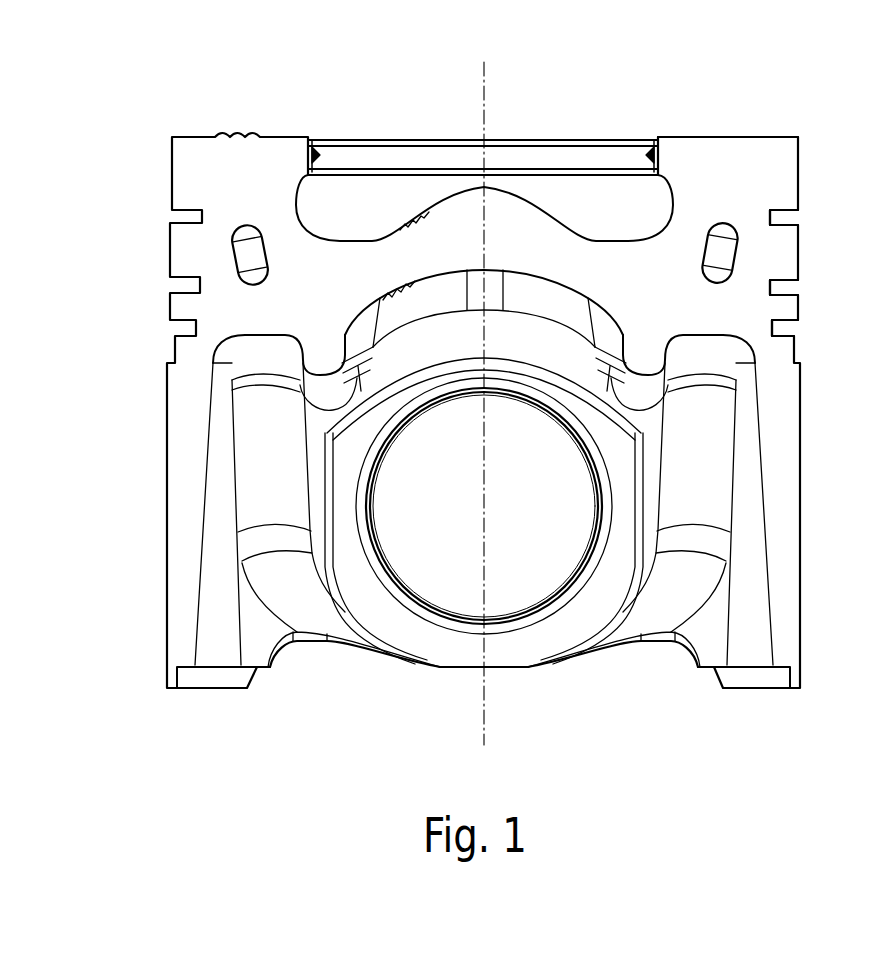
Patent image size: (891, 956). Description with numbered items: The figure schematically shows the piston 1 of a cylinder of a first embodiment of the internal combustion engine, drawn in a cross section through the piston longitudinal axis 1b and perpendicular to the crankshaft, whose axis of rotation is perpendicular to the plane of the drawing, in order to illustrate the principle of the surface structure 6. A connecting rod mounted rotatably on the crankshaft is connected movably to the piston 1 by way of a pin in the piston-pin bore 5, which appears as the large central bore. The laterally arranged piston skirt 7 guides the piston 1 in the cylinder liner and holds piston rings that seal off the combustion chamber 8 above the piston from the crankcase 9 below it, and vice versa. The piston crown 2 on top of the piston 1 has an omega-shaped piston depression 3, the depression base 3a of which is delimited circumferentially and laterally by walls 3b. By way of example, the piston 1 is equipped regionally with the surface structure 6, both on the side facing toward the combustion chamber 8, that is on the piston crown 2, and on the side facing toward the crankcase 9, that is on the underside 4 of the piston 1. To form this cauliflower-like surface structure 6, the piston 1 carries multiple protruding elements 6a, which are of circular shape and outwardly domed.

The piston 1 is at (158, 249).
The piston longitudinal axis 1b is at (468, 561).
The piston crown 2 is at (712, 137).
The piston depression 3 is at (484, 150).
The depression base 3a is at (355, 241).
The walls 3b is at (319, 153).
The underside 4 is at (527, 282).
The piston-pin bore 5 is at (448, 541).
The surface structure 6 is at (292, 118).
The protruding elements 6a is at (260, 135).
The piston skirt 7 is at (787, 257).
The combustion chamber 8 is at (530, 101).
The crankcase 9 is at (585, 703).